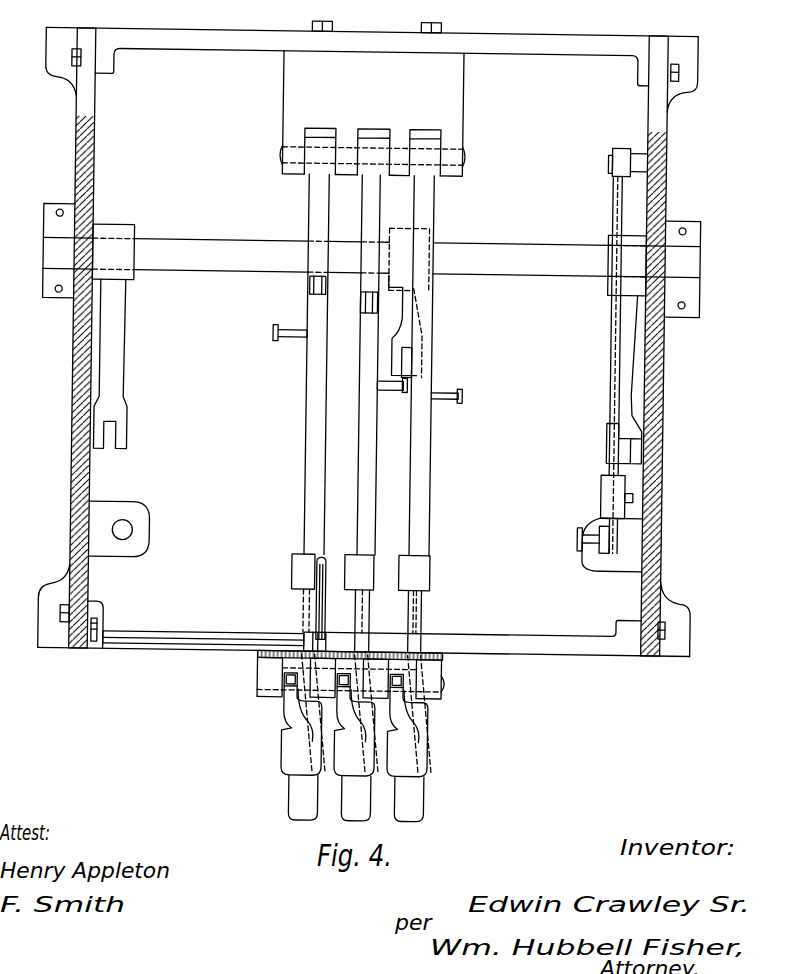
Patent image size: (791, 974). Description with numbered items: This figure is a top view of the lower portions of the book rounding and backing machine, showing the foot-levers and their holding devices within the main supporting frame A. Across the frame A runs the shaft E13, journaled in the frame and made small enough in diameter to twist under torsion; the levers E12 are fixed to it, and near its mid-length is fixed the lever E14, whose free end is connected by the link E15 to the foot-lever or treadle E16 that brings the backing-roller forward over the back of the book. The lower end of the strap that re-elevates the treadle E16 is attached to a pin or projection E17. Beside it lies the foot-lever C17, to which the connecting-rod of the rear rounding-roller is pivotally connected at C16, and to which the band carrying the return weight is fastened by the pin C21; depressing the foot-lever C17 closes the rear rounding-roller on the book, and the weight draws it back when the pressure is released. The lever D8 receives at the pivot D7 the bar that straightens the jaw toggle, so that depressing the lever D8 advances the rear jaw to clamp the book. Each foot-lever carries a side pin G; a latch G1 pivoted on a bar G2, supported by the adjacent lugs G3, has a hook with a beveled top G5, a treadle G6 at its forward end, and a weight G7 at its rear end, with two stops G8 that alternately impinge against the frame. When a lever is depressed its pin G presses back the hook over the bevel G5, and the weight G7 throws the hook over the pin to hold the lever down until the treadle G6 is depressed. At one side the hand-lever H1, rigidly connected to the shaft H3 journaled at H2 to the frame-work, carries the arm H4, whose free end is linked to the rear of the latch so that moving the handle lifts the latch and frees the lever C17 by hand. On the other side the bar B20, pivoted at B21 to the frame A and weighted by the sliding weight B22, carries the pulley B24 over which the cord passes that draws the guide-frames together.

The main supporting-frame A is at (75, 427).
The weighted bar B20 is at (620, 210).
The pivot B21 is at (610, 157).
The sliding weight B22 is at (606, 498).
The pulley B24 is at (581, 549).
The pivotal connection C16 is at (310, 280).
The foot-lever C17 is at (313, 428).
The pin C21 is at (296, 337).
The pivot D7 is at (362, 303).
The lever D8 is at (365, 453).
The lever E12 is at (108, 357).
The shaft E13 is at (371, 257).
The lever E14 is at (405, 242).
The link E15 is at (407, 362).
The foot-treadle E16 is at (423, 475).
The pin E17 is at (442, 395).
The side pin G is at (287, 700).
The latch G1 is at (338, 778).
The bar G2 is at (270, 670).
The lugs G3 is at (286, 692).
The beveled top G5 is at (387, 778).
The treadle G6 is at (356, 798).
The weight G7 is at (300, 565).
The stops G8 is at (288, 656).
The hand-lever H1 is at (98, 645).
The journals H2 is at (108, 636).
The shaft H3 is at (210, 640).
The arm H4 is at (330, 570).